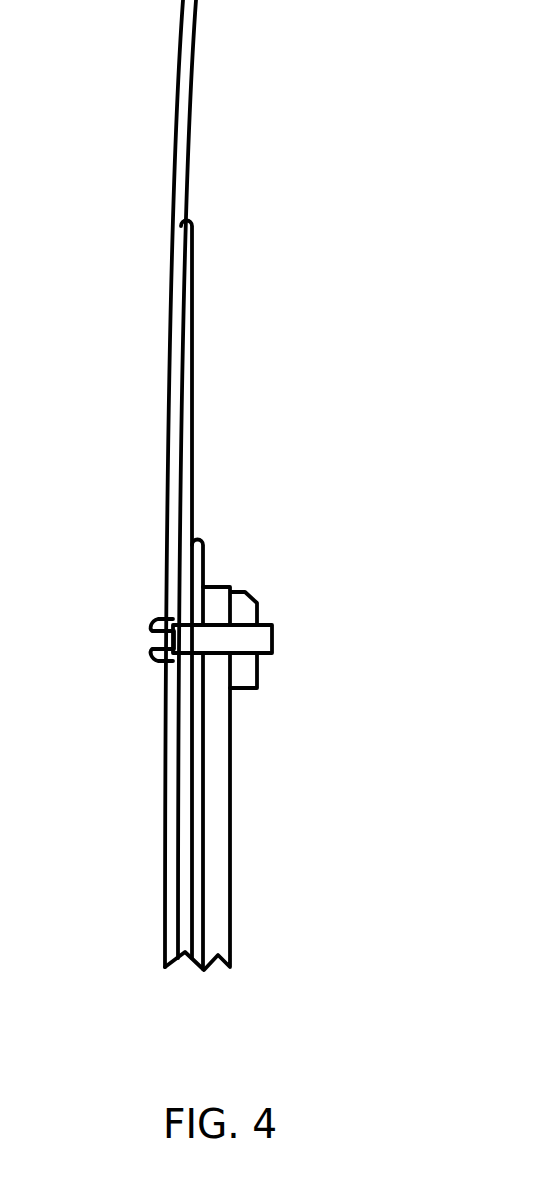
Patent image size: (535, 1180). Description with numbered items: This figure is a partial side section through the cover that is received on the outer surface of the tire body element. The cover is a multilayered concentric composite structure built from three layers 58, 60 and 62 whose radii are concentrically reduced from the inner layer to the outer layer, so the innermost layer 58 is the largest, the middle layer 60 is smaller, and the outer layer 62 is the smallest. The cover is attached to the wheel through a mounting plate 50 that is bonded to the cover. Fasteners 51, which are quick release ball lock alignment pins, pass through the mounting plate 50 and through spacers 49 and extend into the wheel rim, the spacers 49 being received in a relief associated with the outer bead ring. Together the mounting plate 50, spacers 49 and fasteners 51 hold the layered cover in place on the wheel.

The layer 58 is at (183, 143).
The layer 60 is at (183, 282).
The layer 62 is at (197, 560).
The spacers 49 is at (243, 614).
The fasteners 51 is at (252, 642).
The mounting plate 50 is at (213, 803).